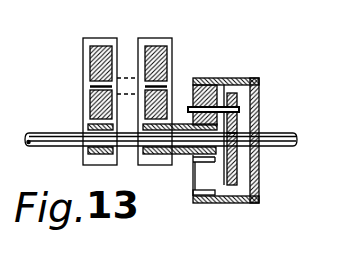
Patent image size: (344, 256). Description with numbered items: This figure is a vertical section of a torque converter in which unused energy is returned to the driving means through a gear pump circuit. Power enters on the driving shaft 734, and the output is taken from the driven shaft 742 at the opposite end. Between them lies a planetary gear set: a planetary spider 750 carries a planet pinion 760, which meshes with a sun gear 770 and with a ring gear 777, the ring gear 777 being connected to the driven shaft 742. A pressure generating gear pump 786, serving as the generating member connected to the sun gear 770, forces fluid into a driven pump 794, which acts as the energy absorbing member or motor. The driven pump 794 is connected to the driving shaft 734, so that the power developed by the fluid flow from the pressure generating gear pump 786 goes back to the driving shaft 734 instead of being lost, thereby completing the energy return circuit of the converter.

The driven pump 794 is at (97, 61).
The pressure generating gear pump 786 is at (165, 58).
The ring gear 777 is at (213, 87).
The planet pinion 760 is at (218, 83).
The sun gear 770 is at (241, 121).
The planetary spider 750 is at (237, 169).
The driving shaft 734 is at (66, 133).
The driven shaft 742 is at (298, 140).